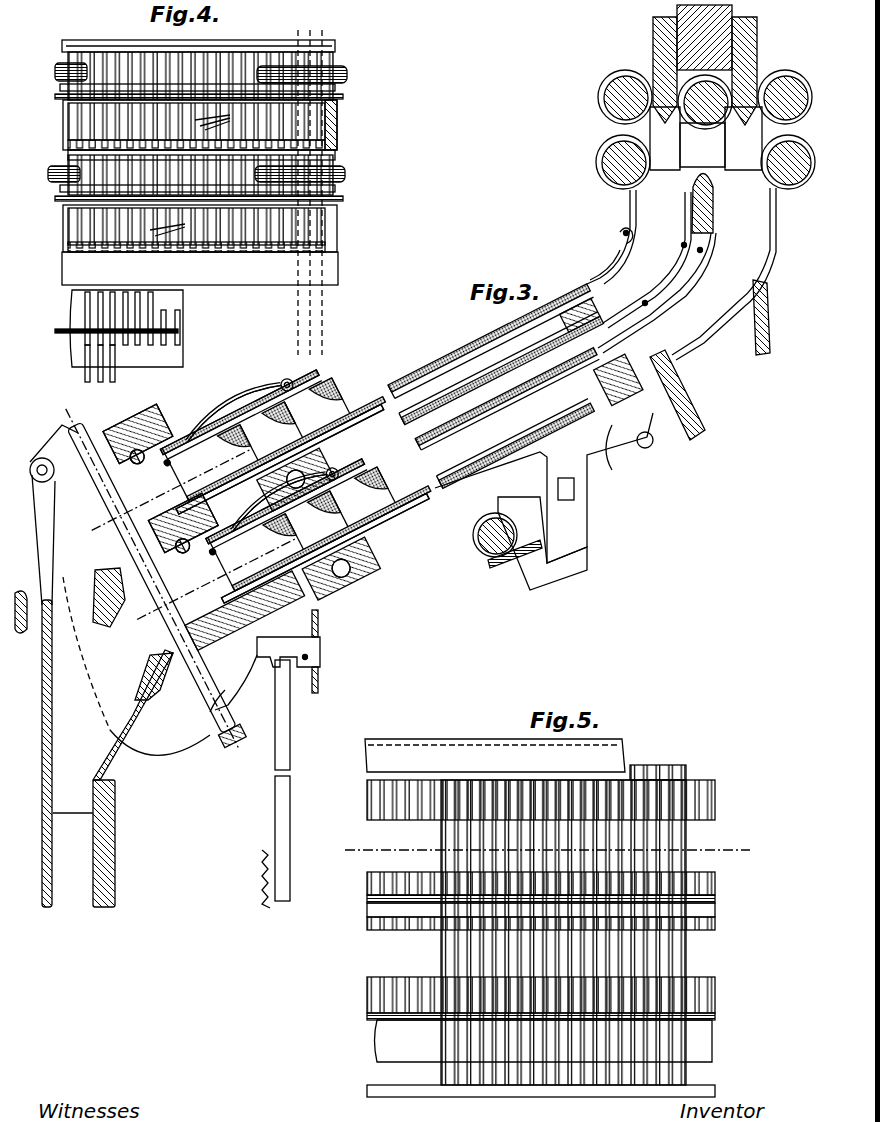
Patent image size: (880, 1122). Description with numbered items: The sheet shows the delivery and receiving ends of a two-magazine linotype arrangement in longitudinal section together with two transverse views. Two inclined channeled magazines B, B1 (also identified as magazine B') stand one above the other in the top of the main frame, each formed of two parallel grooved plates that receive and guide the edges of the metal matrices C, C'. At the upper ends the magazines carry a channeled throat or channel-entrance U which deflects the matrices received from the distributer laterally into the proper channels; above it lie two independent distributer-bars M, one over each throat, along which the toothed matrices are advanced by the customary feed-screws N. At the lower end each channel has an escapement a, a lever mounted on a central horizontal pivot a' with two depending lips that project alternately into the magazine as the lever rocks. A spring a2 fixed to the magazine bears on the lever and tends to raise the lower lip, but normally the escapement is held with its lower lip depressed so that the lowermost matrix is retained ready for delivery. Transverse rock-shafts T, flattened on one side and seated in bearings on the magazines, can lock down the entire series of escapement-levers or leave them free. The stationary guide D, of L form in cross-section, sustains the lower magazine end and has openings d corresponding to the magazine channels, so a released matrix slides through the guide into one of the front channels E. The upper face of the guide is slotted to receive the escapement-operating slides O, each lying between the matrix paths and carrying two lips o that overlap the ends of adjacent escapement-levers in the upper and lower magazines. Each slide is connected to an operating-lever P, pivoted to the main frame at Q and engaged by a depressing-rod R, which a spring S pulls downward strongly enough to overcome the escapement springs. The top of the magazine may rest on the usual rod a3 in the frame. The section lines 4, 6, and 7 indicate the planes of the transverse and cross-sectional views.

In FIG. 4, the transverse rock-shaft T is at (335, 66).
In FIG. 3, the transverse rock-shaft T is at (128, 440).
In FIG. 4, the escapement a is at (214, 132).
In FIG. 3, the escapement a is at (292, 483).
In FIG. 4, the central horizontal pivot a' is at (215, 150).
In FIG. 3, the central horizontal pivot a' is at (258, 448).
In FIG. 3, the spring a2 is at (250, 446).
In FIG. 3, the rod a3 is at (485, 550).
In FIG. 4, the inclined channeled magazine B is at (222, 125).
In FIG. 3, the inclined channeled magazine B is at (478, 354).
In FIG. 4, the inclined channeled magazine B1 is at (338, 232).
In FIG. 3, the inclined channeled magazine B1 is at (529, 414).
In FIG. 3, the inclined channeled magazine B' is at (531, 500).
In FIG. 4, the metal matrix C is at (197, 172).
In FIG. 3, the metal matrix C is at (706, 138).
In FIG. 3, the metal matrix C' is at (277, 481).
In FIG. 4, the operating-lever P is at (95, 312).
In FIG. 3, the operating-lever P is at (258, 660).
In FIG. 4, the depressing-rod R is at (113, 378).
In FIG. 3, the depressing-rod R is at (292, 724).
In FIG. 4, the escapement-operating slide O is at (323, 318).
In FIG. 3, the escapement-operating slide O is at (259, 544).
In FIG. 5, the escapement-operating slide O is at (645, 765).
In FIG. 3, the lip o is at (158, 511).
In FIG. 5, the lip o is at (672, 795).
In FIG. 3, the distributer-bar M is at (653, 24).
In FIG. 3, the feed-screw N is at (607, 146).
In FIG. 3, the channeled throat U is at (681, 307).
In FIG. 3, the guide D is at (55, 445).
In FIG. 5, the guide D is at (367, 797).
In FIG. 3, the channel d is at (207, 558).
In FIG. 5, the channel d is at (480, 828).
In FIG. 3, the front channel E is at (84, 843).
In FIG. 3, the pivot Q is at (322, 650).
In FIG. 3, the spring S is at (260, 880).
In FIG. 3, the section line 4 4 is at (153, 574).
In FIG. 3, the section line 6 6 is at (164, 489).
In FIG. 5, the section line 6 6 is at (545, 850).
In FIG. 3, the section line 7 7 is at (209, 578).
In FIG. 5, the section line 7 7 is at (367, 893).